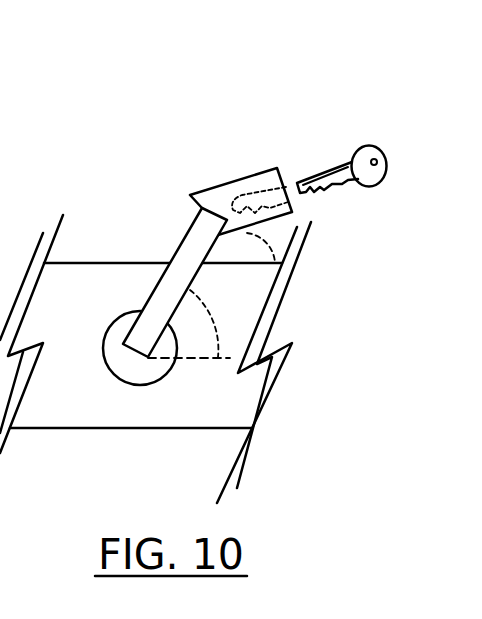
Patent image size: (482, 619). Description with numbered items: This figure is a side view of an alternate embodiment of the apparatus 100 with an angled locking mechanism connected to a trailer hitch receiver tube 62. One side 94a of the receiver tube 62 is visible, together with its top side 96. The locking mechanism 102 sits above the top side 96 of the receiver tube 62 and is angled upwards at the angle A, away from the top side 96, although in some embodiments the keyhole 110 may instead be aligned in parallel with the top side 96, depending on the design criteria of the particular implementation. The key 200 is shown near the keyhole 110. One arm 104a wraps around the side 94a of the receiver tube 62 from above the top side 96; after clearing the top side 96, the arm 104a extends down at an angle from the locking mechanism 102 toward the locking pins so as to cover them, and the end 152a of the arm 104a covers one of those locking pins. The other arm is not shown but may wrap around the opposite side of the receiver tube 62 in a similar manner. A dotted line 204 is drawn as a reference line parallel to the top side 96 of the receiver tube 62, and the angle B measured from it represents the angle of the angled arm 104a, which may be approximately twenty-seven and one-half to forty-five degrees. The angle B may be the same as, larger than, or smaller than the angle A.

The apparatus 100 is at (202, 196).
The locking mechanism 102 is at (227, 173).
The arm 104a is at (200, 233).
The keyhole 110 is at (262, 183).
The key 200 is at (362, 146).
The top side 96 is at (85, 263).
The receiver tube 62 is at (105, 432).
The side 94a is at (153, 413).
The end 152a is at (117, 380).
The dotted line 204 is at (210, 382).